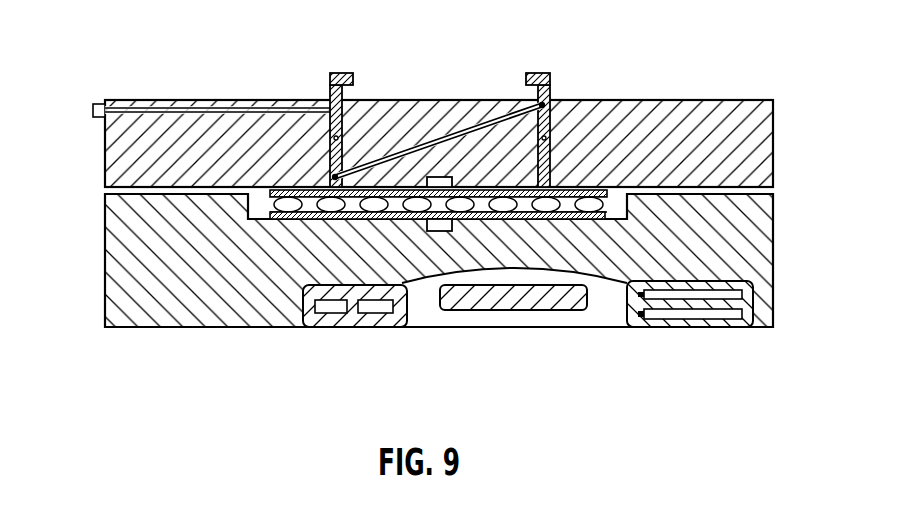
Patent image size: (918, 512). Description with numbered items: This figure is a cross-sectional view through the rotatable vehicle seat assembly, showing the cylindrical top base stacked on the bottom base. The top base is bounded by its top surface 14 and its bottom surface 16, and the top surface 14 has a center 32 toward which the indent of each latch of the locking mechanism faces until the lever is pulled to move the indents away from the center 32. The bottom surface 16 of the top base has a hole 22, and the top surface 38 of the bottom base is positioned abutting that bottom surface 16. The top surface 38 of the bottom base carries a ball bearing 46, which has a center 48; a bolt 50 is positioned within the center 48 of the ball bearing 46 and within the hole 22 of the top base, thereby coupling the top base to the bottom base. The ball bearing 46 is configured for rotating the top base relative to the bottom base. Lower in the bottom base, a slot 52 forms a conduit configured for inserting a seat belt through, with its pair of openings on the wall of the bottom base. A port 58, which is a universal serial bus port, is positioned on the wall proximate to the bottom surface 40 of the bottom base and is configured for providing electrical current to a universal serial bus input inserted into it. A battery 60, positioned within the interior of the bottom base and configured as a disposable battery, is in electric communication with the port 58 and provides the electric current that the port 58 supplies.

The top surface 14 is at (676, 99).
The center 32 is at (415, 99).
The center 48 is at (442, 177).
The hole 22 is at (420, 187).
The top surface 38 is at (733, 187).
The bottom surface 16 is at (758, 197).
The bottom surface 40 is at (202, 312).
The ball bearing 46 is at (290, 205).
The bolt 50 is at (437, 232).
The port 58 is at (333, 307).
The slot 52 is at (505, 300).
The battery 60 is at (682, 313).